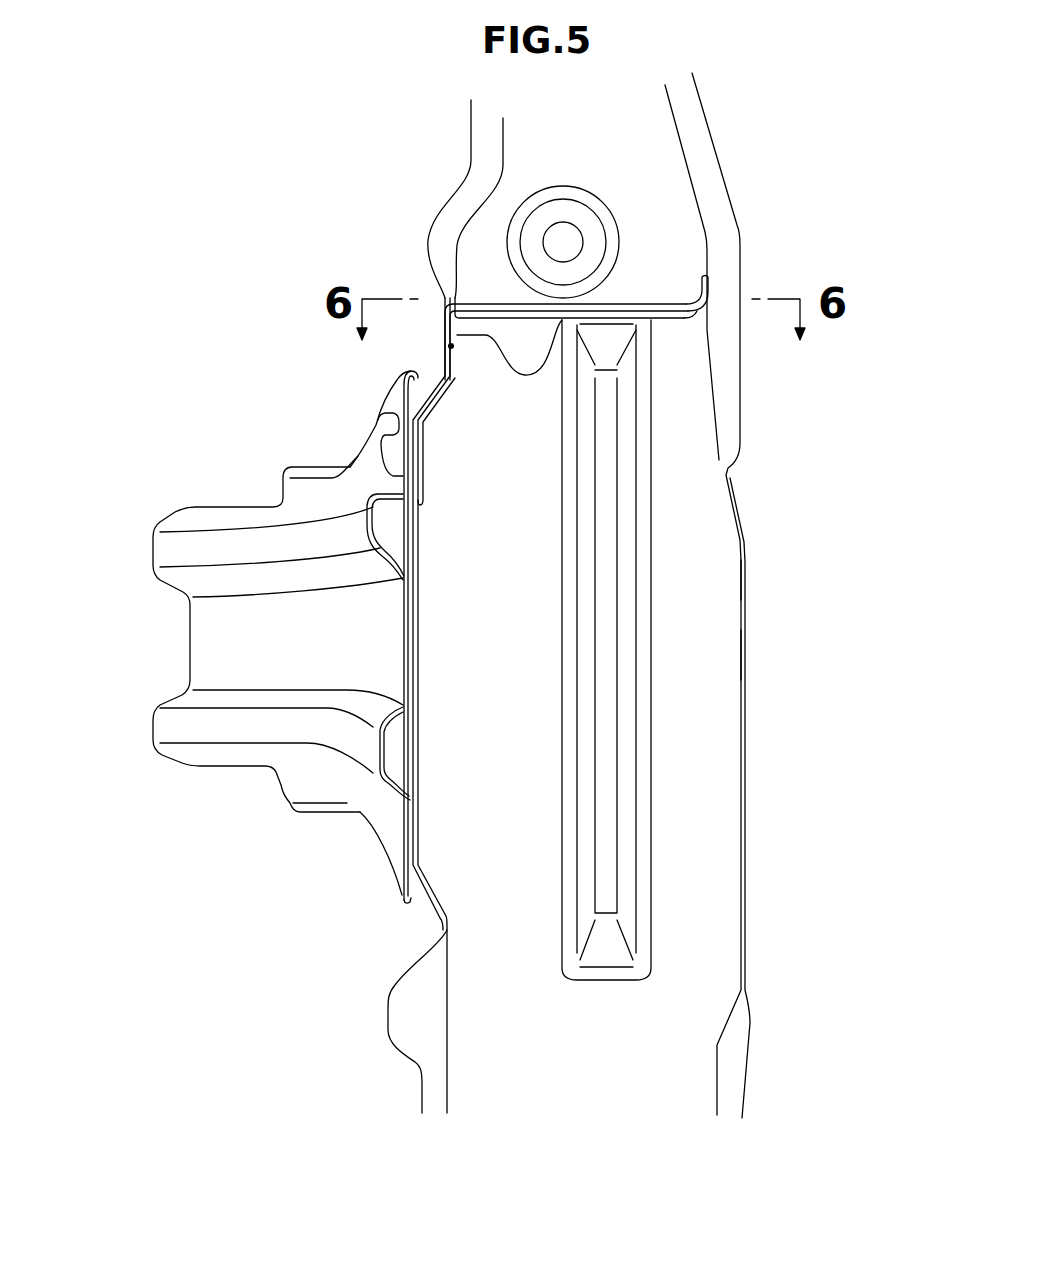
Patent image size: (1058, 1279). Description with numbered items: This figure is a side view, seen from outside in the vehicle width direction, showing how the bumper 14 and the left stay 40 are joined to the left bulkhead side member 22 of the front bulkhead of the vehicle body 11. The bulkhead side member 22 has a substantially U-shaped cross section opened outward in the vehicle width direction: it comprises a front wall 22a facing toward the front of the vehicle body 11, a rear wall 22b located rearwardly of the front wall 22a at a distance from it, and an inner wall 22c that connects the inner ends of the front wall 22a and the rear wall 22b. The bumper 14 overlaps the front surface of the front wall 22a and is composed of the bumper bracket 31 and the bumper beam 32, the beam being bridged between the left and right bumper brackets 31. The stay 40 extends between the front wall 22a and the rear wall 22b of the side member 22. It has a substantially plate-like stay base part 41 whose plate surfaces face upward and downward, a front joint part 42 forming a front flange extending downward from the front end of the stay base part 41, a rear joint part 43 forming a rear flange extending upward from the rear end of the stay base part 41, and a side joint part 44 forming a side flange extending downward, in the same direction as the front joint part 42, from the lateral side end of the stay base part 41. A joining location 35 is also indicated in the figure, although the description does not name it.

The vehicle body 11 is at (243, 195).
The bumper 14 is at (300, 893).
The bulkhead side member 22 is at (750, 776).
The front wall 22a is at (458, 295).
The rear wall 22b is at (747, 575).
The inner wall 22c is at (703, 656).
The bumper bracket 31 is at (407, 753).
The bumper beam 32 is at (247, 730).
The weld portion 35 is at (450, 344).
The stay 40 is at (637, 287).
The stay base part 41 is at (670, 318).
The front joint part 42 is at (458, 357).
The rear joint part 43 is at (703, 297).
The side joint part 44 is at (534, 367).